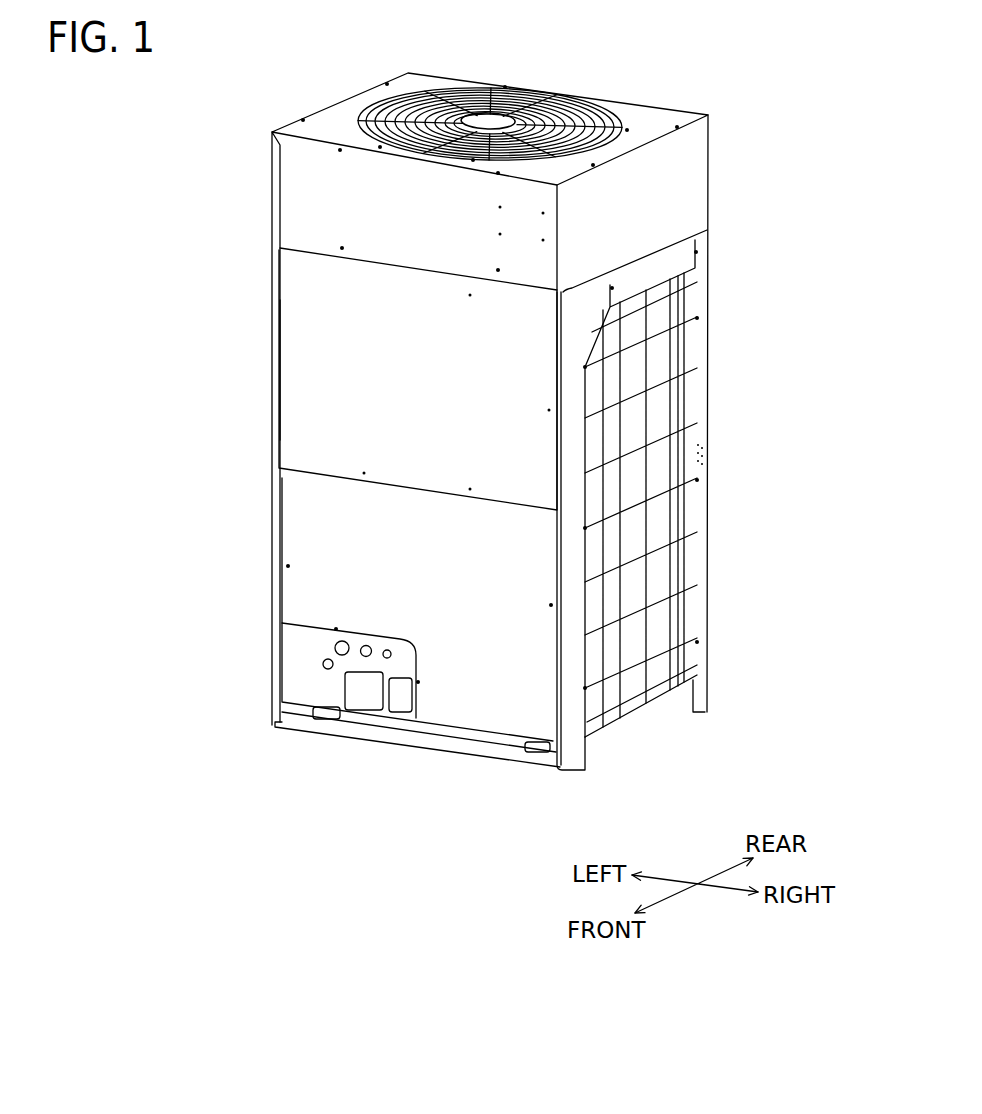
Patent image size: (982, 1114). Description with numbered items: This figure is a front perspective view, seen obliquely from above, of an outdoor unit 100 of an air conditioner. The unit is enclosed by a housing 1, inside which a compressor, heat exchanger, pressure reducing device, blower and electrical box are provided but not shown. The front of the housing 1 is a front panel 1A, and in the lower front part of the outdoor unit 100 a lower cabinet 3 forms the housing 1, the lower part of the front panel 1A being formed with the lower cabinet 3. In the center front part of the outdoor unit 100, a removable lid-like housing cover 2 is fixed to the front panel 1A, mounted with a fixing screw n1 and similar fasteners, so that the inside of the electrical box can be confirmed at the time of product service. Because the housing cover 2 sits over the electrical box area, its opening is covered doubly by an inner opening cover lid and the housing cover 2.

The outdoor unit 100 is at (753, 65).
The housing 1 is at (298, 233).
The housing cover 2 is at (298, 320).
The fixing screw n1 is at (287, 370).
The lower cabinet 3 is at (333, 527).
The front panel 1A is at (527, 688).